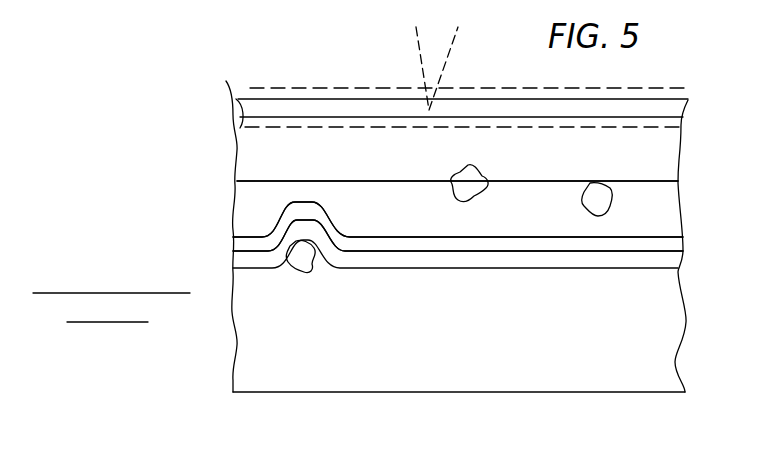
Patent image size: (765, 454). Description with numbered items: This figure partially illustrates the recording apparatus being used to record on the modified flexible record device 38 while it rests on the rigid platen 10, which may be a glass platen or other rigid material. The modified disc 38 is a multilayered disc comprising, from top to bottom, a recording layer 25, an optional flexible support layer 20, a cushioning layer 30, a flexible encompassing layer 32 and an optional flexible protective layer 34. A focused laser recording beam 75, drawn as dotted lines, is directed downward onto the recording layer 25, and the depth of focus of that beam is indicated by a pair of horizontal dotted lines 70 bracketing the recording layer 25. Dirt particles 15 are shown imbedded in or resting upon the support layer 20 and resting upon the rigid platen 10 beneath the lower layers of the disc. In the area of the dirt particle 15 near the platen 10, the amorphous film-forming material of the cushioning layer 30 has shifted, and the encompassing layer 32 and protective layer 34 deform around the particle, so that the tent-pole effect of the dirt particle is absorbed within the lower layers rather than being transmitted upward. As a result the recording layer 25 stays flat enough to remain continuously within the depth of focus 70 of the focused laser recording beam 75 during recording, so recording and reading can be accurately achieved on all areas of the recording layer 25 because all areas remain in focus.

The rigid platen 10 is at (398, 380).
The dirt particles 15 is at (583, 207).
The flexible support layer 20 is at (666, 160).
The recording layer 25 is at (686, 106).
The cushioning layer 30 is at (668, 212).
The flexible encompassing layer 32 is at (675, 243).
The flexible protective layer 34 is at (672, 264).
The modified flexible record device 38 is at (219, 98).
The depth of focus 70 is at (250, 88).
The focused laser recording beam 75 is at (421, 53).